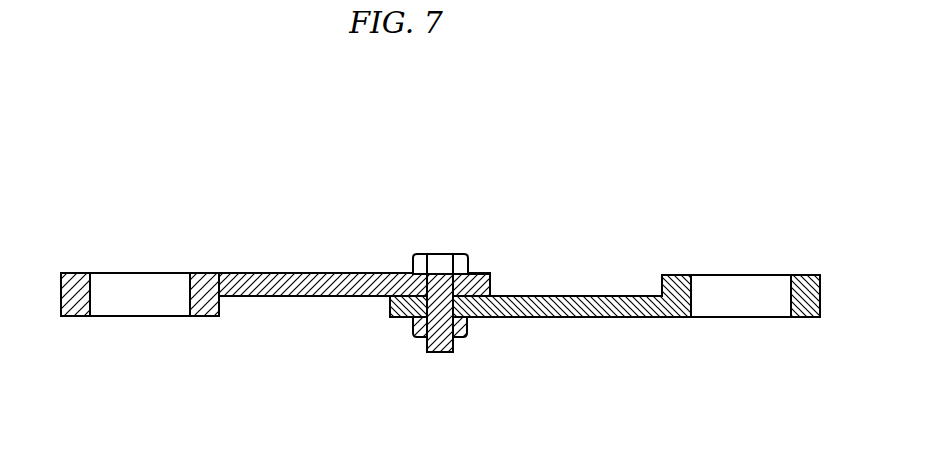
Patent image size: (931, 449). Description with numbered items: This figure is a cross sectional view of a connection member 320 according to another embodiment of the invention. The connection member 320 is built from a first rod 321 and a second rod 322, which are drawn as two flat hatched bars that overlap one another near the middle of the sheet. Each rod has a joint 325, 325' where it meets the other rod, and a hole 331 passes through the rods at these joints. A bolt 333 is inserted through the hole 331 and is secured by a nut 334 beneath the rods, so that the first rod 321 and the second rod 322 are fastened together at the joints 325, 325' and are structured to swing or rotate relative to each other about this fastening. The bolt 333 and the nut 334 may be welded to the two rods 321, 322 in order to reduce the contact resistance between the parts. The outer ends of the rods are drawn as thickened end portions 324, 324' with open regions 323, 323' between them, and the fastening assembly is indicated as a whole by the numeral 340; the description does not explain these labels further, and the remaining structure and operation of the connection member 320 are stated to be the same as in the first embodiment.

The connection member 320 is at (162, 153).
The first rod 321 is at (293, 282).
The second rod 322 is at (583, 315).
The fixing hole of first bracket 323 is at (140, 322).
The fixing hole of second bracket 323' is at (741, 323).
The fixing flange of first bracket 324 is at (73, 269).
The fixing flange of second bracket 324' is at (802, 269).
The joint 325 is at (506, 269).
The joint 325' is at (369, 333).
The hole 331 is at (397, 279).
The bolt 333 is at (440, 267).
The nut 334 is at (467, 330).
The fastening bolt 340 is at (448, 373).